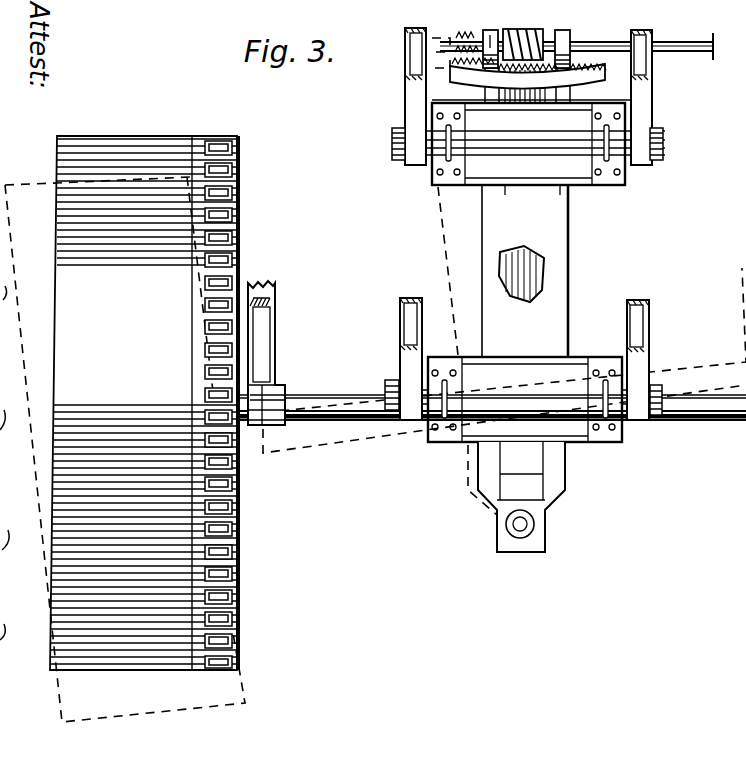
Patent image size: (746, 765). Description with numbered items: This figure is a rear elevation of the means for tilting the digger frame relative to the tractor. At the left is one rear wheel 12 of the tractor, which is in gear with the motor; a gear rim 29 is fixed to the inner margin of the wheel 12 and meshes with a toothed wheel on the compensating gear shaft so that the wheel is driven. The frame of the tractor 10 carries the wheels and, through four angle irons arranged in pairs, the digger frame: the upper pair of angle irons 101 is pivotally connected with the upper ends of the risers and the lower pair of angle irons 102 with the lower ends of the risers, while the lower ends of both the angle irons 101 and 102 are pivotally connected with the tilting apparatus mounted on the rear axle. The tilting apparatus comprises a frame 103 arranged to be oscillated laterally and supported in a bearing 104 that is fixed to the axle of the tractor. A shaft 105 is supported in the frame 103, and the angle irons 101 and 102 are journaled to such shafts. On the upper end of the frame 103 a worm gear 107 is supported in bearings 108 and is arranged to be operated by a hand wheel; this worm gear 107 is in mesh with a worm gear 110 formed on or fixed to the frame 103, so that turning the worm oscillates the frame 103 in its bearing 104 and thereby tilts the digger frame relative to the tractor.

The rear wheel 12 is at (117, 150).
The gear rim 29 is at (232, 143).
The frame of the tractor 10 is at (262, 326).
The upper pair of angle irons 101 is at (412, 116).
The lower pair of angle irons 102 is at (406, 330).
The frame 103 is at (525, 271).
The bearing 104 is at (562, 478).
The shaft 105 is at (416, 165).
The worm gear 107 is at (570, 5).
The bearings 108 is at (490, 30).
The worm gear 110 is at (590, 72).